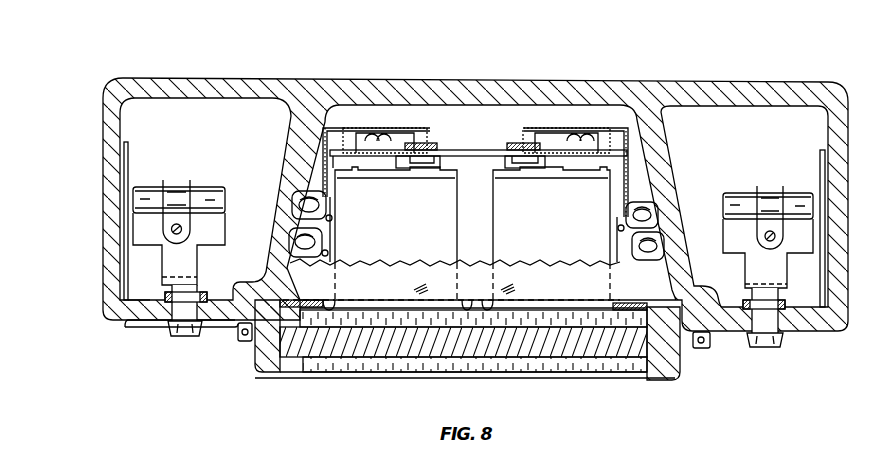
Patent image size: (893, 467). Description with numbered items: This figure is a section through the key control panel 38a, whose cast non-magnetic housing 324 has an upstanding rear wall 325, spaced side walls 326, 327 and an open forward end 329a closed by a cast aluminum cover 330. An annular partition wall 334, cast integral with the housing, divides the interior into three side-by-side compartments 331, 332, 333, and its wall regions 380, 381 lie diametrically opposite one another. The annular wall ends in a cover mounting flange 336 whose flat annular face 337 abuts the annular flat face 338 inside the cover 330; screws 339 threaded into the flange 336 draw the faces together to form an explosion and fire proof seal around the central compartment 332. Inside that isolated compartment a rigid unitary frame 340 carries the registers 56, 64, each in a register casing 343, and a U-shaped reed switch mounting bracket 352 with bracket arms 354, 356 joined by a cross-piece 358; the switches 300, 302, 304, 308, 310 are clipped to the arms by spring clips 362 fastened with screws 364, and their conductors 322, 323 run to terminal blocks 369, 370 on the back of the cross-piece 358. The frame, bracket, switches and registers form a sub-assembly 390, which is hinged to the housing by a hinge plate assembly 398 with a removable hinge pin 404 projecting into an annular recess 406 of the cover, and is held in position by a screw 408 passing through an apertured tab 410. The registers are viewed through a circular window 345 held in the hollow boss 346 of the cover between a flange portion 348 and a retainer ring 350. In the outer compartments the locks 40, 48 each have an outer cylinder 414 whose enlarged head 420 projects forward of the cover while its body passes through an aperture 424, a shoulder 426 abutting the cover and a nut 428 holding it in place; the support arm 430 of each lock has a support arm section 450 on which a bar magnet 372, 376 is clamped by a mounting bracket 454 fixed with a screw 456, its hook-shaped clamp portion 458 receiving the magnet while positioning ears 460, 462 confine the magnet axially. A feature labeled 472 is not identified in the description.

The key control panel 38a is at (226, 68).
The housing 324 is at (262, 76).
The side wall 326 is at (113, 102).
The side wall 327 is at (838, 165).
The rear wall 325 is at (634, 90).
The compartment 331 is at (216, 130).
The compartment 332 is at (502, 131).
The compartment 333 is at (767, 135).
The annular partition wall 334 is at (656, 143).
The wall region 381 is at (668, 220).
The wall region 380 is at (288, 178).
The cover mounting flange 336 is at (248, 283).
The annular face 337 is at (222, 305).
The rib 472 is at (140, 292).
The open forwardly directed end 329a is at (116, 320).
The shoulder 426 is at (788, 325).
The conductor 322 is at (324, 126).
The conductor 323 is at (625, 143).
The reed switch mounting bracket 352 is at (575, 78).
The magnet positioning ear 460 is at (126, 205).
The support arm section 450 is at (143, 228).
The bar magnet 372 is at (146, 195).
The bar magnet 376 is at (740, 197).
The mounting bracket 454 is at (167, 180).
The hook-shaped clamp portion 458 is at (181, 186).
The screw 456 is at (177, 235).
The support arm 430 is at (134, 218).
The magnet positioning ear 462 is at (222, 214).
The lock 40 is at (175, 348).
The lock 48 is at (791, 340).
The nut 428 is at (166, 298).
The outer non-rotatable cylinder 414 is at (195, 345).
The aperture 424 is at (190, 334).
The enlarged head 420 is at (167, 331).
The cover 330 is at (144, 326).
The annular flat face 338 is at (241, 331).
The annular recess 406 is at (701, 320).
The screw 339 is at (250, 348).
The hollow boss 346 is at (257, 368).
The hinge plate assembly 398 is at (645, 310).
The hinge pin 404 is at (662, 340).
The circular window 345 is at (562, 354).
The flange portion 348 is at (292, 360).
The retainer ring 350 is at (312, 312).
The apertured tab 410 is at (305, 325).
The screw 408 is at (263, 377).
The switch 300 is at (326, 197).
The frame 340 is at (507, 273).
The switch 302 is at (296, 258).
The register 64 is at (488, 249).
The register 56 is at (463, 230).
The register casing 343 is at (432, 209).
The switch 310 is at (607, 265).
The sub-assembly 390 is at (502, 146).
The cross-piece 358 is at (453, 151).
The terminal block 369 is at (365, 141).
The terminal block 370 is at (573, 143).
The spring clip 362 is at (300, 192).
The screw 364 is at (332, 219).
The bracket arm 354 is at (328, 234).
The bracket arm 356 is at (621, 193).
The switch 308 is at (640, 200).
The switch 304 is at (683, 464).